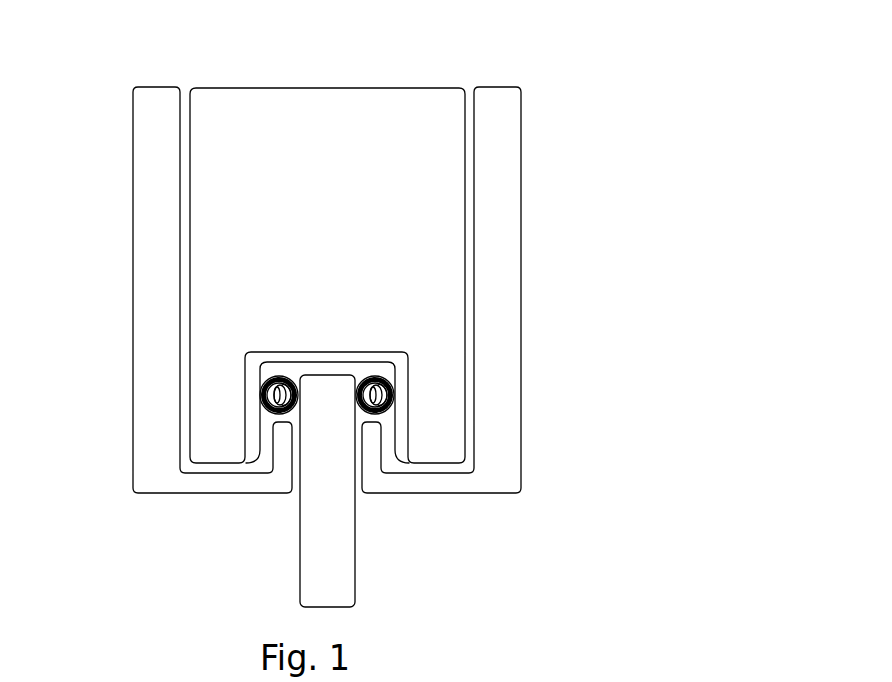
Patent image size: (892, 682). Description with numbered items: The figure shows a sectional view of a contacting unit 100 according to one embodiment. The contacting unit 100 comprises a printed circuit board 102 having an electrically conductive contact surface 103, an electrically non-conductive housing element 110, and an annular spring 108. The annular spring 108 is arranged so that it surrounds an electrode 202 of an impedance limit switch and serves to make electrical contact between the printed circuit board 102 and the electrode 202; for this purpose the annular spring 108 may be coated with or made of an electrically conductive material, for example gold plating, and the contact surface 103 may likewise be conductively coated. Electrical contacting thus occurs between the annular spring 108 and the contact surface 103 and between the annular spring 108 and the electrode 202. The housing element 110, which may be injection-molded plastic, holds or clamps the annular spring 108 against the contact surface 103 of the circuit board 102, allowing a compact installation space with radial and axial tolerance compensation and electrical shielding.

The contacting unit 100 is at (421, 339).
The printed circuit board 102 is at (355, 120).
The contact surface 103 is at (305, 358).
The annular spring 108 is at (387, 383).
The housing element 110 is at (492, 135).
The electrode 202 is at (320, 532).